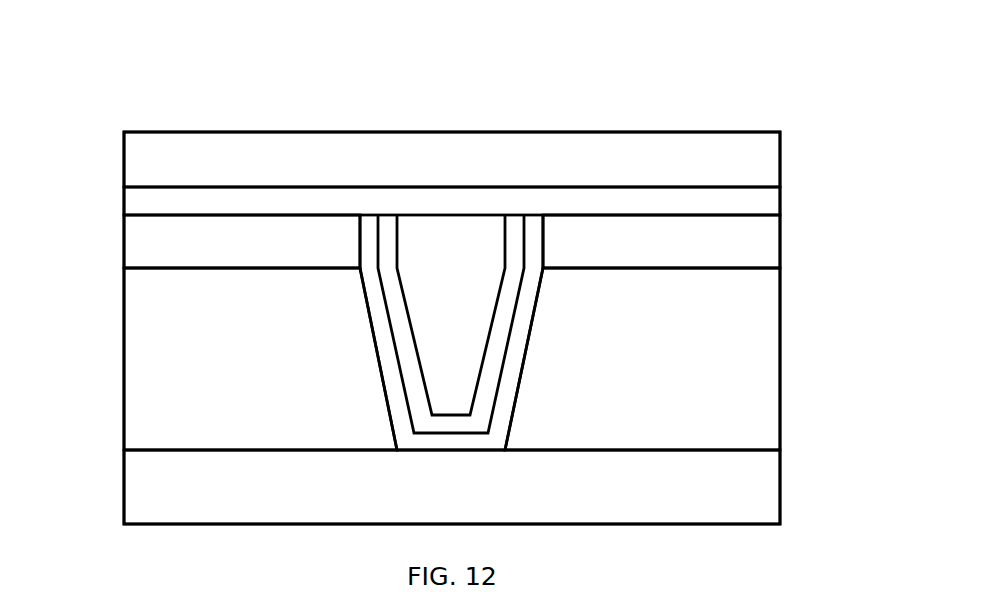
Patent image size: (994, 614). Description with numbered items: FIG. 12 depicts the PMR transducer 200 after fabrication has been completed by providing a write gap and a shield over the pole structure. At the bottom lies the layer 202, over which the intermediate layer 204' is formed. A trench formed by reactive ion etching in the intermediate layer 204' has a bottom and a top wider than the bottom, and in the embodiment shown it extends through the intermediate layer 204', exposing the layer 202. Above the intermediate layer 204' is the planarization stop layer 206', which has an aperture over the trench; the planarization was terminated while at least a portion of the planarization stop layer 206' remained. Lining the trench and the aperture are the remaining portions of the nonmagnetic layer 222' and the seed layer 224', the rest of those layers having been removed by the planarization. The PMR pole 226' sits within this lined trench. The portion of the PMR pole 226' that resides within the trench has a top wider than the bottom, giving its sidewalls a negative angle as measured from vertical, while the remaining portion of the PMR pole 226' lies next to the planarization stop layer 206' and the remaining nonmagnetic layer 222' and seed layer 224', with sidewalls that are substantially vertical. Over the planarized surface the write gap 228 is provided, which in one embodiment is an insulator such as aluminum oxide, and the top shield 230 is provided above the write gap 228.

The PMR transducer 200 is at (430, 58).
The layer 202 is at (780, 490).
The intermediate layer 204' is at (452, 359).
The planarization stop layer 206' is at (452, 236).
The nonmagnetic layer 222' is at (498, 274).
The seed layer 224' is at (393, 261).
The PMR pole 226' is at (447, 257).
The write gap 228 is at (124, 200).
The top shield 230 is at (780, 160).